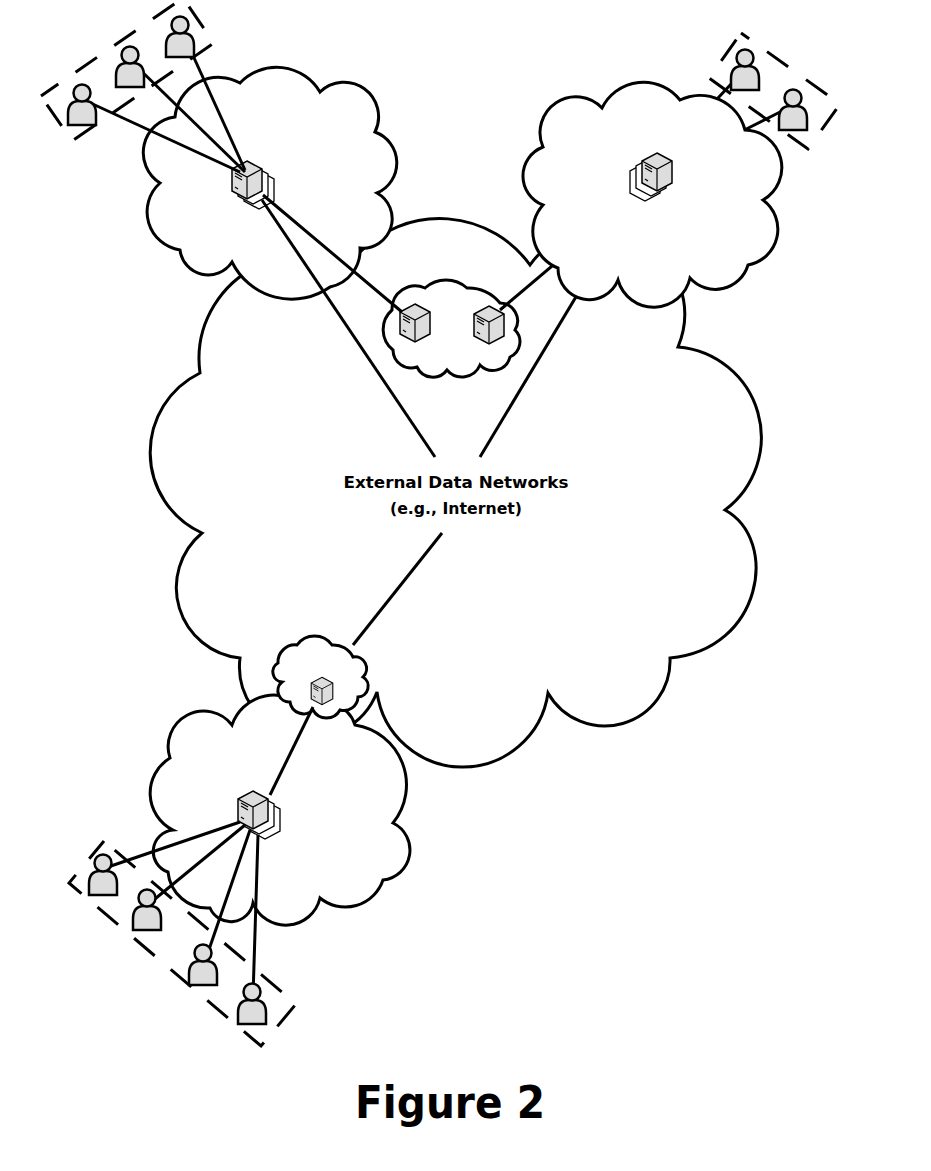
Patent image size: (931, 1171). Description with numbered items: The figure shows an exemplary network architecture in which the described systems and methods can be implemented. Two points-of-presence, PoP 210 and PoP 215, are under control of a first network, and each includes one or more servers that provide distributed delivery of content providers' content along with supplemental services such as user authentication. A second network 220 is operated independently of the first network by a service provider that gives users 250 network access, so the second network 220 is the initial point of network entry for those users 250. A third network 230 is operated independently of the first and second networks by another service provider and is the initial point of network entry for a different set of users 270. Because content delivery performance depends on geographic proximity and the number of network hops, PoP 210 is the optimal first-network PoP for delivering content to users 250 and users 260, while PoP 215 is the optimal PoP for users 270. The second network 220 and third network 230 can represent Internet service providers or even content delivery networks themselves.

The point-of-presence 210 is at (433, 353).
The point-of-presence 215 is at (338, 673).
The second network 220 is at (329, 190).
The third network 230 is at (302, 822).
The users 250 is at (117, 48).
The users 260 is at (787, 66).
The users 270 is at (155, 957).